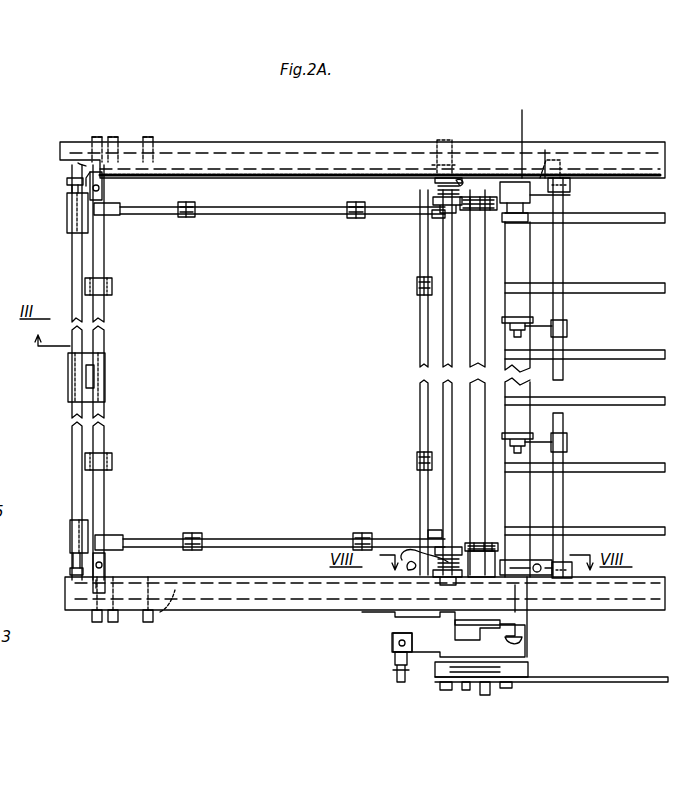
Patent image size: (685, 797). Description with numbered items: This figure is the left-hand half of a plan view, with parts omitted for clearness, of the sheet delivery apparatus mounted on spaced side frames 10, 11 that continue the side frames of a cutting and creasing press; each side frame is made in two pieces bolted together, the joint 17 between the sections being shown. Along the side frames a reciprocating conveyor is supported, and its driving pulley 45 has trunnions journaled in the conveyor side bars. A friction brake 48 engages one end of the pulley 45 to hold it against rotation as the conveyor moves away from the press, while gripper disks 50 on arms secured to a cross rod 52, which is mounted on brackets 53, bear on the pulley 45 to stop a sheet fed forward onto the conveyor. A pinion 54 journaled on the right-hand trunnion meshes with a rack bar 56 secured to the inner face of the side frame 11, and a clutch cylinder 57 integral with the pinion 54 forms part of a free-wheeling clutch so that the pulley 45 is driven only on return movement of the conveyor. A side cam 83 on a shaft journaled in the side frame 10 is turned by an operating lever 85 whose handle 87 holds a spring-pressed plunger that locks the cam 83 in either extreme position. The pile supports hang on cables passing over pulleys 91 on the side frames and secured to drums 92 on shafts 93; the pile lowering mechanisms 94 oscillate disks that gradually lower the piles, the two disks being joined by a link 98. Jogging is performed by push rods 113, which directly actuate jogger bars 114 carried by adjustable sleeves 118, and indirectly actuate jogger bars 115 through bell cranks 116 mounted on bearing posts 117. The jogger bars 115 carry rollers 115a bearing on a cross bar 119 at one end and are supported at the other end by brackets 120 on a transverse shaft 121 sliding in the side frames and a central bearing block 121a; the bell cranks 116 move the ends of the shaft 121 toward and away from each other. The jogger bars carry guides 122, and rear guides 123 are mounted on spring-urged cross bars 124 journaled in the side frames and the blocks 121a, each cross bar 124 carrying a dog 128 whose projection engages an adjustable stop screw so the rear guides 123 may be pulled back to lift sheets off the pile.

The side frame 10 is at (278, 606).
The side frame 11 is at (302, 144).
The joint 17 is at (578, 648).
The driving pulley 45 is at (527, 255).
The friction brake 48 is at (533, 575).
The gripper disks 50 is at (527, 372).
The cross rod 52 is at (565, 311).
The brackets 53 is at (572, 175).
The pinion 54 is at (541, 168).
The rack bar 56 is at (293, 178).
The clutch cylinder 57 is at (566, 192).
The side cam 83 is at (425, 585).
The operating lever 85 is at (509, 638).
The handle 87 is at (524, 641).
The pulleys 91 is at (170, 150).
The drums 92 is at (475, 180).
The shafts 93 is at (478, 240).
The pile lowering mechanism 94 is at (472, 675).
The link 98 is at (590, 680).
The push rods 113 is at (222, 150).
The jogger bars 114 is at (422, 420).
The jogger bars 115 is at (284, 215).
The rollers 115a is at (432, 216).
The bell cranks 116 is at (102, 190).
The bearing posts 117 is at (72, 162).
The sleeves 118 is at (412, 170).
The cross bar 119 is at (432, 336).
The brackets 120 is at (88, 207).
The transverse shaft 121 is at (72, 462).
The central bearing block 121a is at (68, 378).
The guides 122 is at (184, 218).
The rear guides 123 is at (112, 284).
The cross bars 124 is at (104, 497).
The dog 128 is at (82, 165).